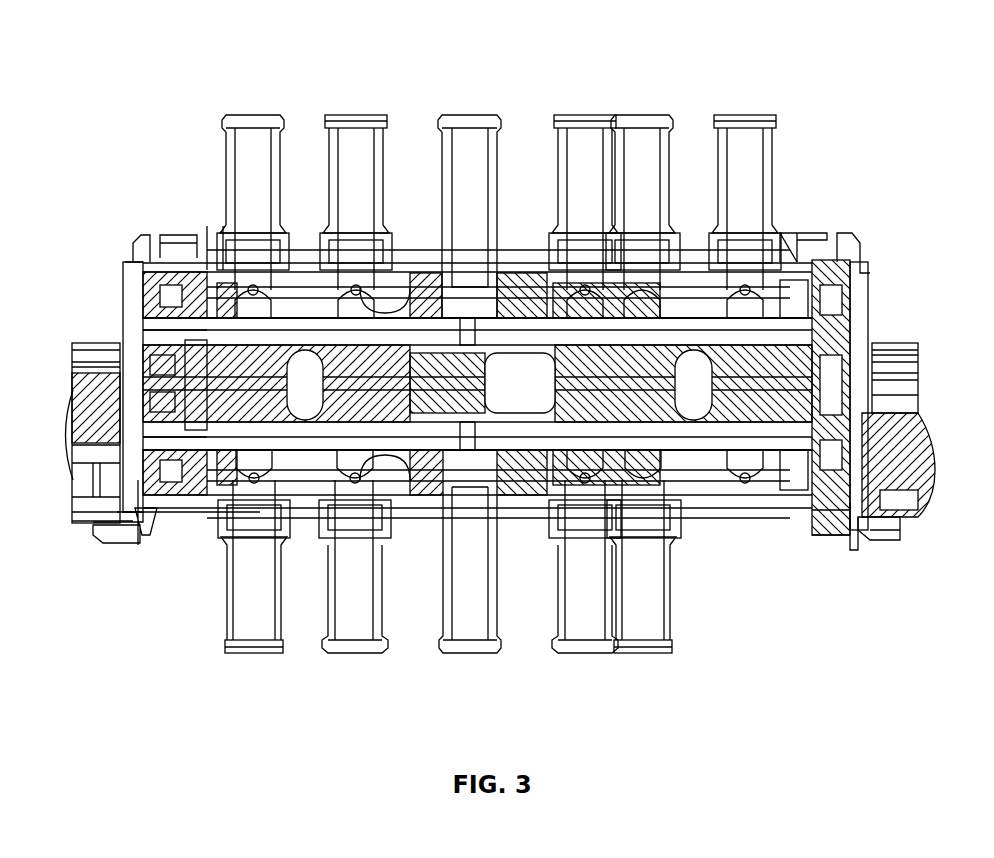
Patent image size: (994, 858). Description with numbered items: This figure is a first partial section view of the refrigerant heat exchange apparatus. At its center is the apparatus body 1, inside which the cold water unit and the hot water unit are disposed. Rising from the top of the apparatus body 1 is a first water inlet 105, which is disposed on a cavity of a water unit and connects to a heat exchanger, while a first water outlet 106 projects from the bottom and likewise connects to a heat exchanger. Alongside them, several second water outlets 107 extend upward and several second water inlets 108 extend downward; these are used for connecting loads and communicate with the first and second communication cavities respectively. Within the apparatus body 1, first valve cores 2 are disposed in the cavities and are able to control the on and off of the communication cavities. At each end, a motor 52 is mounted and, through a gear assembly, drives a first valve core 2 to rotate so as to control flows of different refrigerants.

The apparatus body 1 is at (742, 523).
The first valve core 2 is at (217, 513).
The motor 52 is at (100, 342).
The first water inlet 105 is at (470, 113).
The first water outlet 106 is at (465, 655).
The second water outlet 107 is at (252, 113).
The second water inlet 108 is at (246, 655).